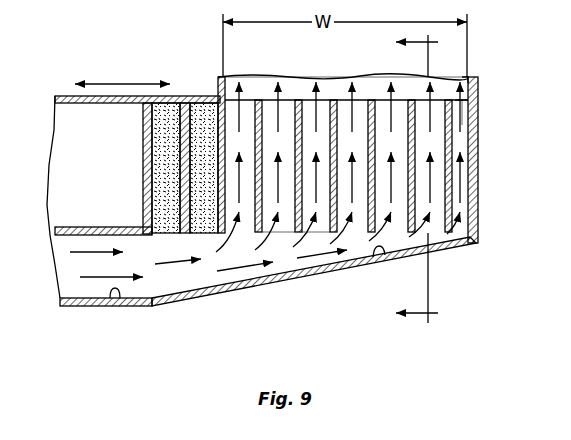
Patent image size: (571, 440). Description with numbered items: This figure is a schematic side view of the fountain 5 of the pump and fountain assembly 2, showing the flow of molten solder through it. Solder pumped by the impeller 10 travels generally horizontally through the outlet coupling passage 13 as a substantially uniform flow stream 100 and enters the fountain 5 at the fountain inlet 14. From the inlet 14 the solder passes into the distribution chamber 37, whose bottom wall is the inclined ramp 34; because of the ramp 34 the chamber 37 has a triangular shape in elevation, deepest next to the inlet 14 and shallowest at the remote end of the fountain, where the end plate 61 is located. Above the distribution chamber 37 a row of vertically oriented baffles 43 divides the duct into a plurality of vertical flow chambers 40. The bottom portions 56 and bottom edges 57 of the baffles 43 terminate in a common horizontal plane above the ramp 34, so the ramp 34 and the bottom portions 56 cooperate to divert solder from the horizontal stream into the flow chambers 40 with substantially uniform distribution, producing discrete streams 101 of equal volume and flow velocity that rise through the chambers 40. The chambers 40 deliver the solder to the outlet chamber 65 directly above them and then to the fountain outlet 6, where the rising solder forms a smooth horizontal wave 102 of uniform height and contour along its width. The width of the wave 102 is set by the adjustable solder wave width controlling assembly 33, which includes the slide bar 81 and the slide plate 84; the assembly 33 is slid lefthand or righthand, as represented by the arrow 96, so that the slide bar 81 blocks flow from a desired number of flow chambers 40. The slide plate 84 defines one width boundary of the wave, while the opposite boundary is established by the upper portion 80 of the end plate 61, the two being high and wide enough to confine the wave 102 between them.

The pump and fountain assembly 2 is at (133, 62).
The flow stream 100 is at (75, 280).
The arrow 96 is at (108, 80).
The slide bar 81 is at (202, 96).
The slide plate 84 is at (219, 77).
The adjustable solder wave width controlling assembly 33 is at (237, 70).
The wave 102 is at (325, 90).
The impeller 10 is at (396, 182).
The fountain outlet 6 is at (443, 62).
The baffles 43 is at (453, 190).
The vertical flow chambers 40 is at (462, 133).
The end plate 61 is at (481, 206).
The upper portion of the end plate 80 is at (468, 74).
The outlet chamber 65 is at (465, 90).
The streams 101 is at (462, 112).
The fountain 5 is at (240, 296).
The outlet coupling passage 13 is at (115, 299).
The inclined ramp 34 is at (382, 256).
The fountain inlet 14 is at (143, 283).
The distribution chamber 37 is at (312, 272).
The bottom portions 56 is at (290, 242).
The bottom edges 57 is at (302, 240).